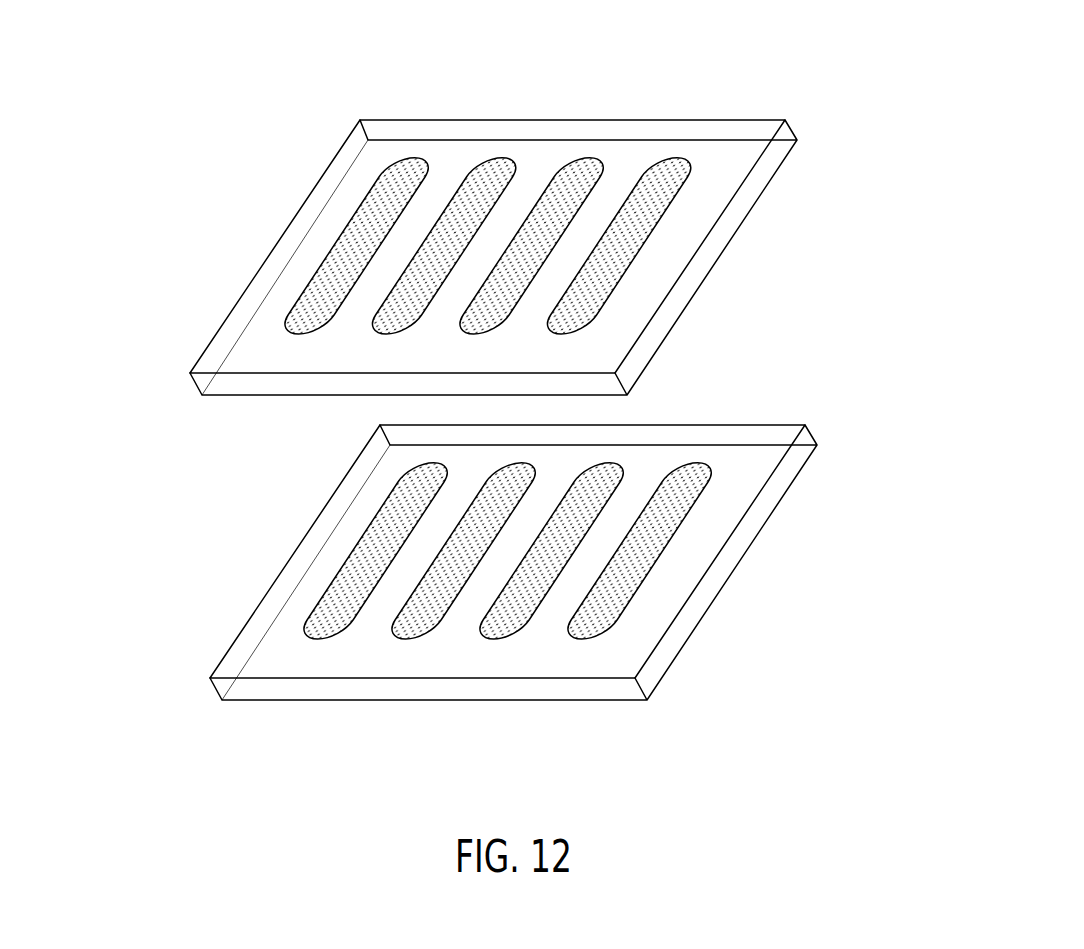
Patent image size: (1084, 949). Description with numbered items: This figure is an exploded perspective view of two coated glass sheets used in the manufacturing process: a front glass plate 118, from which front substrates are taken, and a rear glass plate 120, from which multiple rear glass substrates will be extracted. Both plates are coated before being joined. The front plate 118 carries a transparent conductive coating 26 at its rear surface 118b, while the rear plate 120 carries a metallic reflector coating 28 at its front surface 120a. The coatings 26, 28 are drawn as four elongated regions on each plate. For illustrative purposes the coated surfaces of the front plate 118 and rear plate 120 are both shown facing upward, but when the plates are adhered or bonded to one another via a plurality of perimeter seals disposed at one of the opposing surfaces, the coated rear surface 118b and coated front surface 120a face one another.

The rear glass plate 120 is at (210, 271).
The front surface of the rear plate 120a is at (367, 152).
The metallic reflector coating 28 is at (668, 160).
The front glass plate 118 is at (772, 572).
The rear surface of the front plate 118b is at (780, 438).
The transparent conductive coating 26 is at (578, 640).